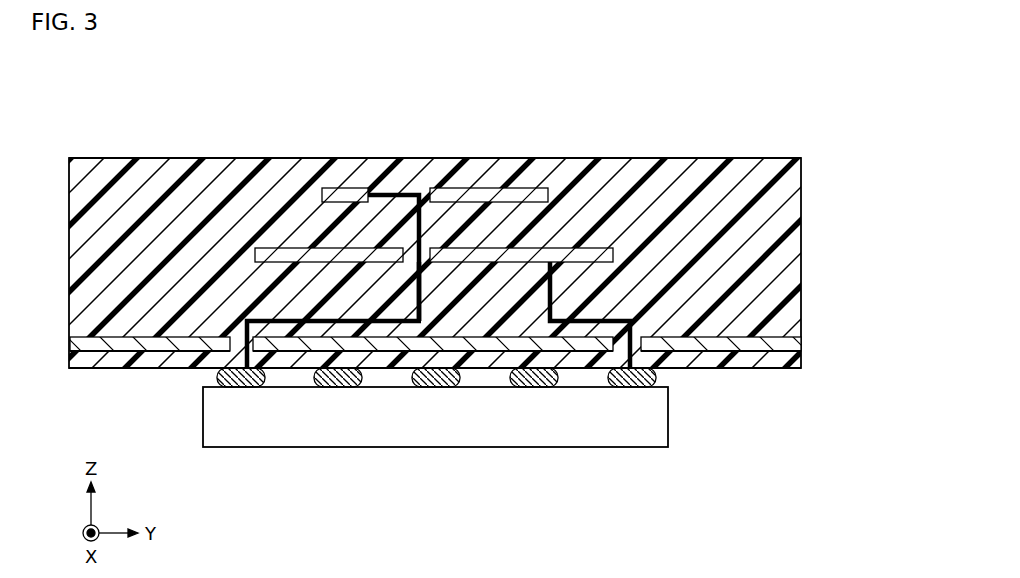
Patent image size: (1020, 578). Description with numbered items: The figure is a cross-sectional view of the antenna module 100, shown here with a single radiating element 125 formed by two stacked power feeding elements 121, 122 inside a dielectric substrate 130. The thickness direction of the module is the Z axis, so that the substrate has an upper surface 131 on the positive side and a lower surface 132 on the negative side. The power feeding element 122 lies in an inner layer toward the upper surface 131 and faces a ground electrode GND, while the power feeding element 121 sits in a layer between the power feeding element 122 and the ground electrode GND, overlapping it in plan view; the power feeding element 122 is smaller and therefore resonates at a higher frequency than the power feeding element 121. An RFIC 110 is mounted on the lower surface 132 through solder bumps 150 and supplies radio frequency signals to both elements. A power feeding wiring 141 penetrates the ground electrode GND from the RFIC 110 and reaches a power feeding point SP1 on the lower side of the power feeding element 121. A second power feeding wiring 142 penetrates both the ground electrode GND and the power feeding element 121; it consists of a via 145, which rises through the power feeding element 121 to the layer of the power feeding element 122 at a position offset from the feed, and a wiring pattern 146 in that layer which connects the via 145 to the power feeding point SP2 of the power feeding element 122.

The antenna module 100 is at (792, 114).
The RFIC 110 is at (668, 418).
The power feeding element 121 is at (528, 257).
The power feeding element 122 is at (492, 193).
The radiating element 125 is at (521, 170).
The dielectric substrate 130 is at (801, 222).
The upper surface 131 is at (750, 158).
The lower surface 132 is at (751, 369).
The power feeding wiring 141 is at (632, 330).
The power feeding wiring 142 is at (293, 325).
The via 145 is at (418, 285).
The wiring pattern 146 is at (409, 193).
The solder bump 150 is at (218, 376).
The ground electrode GND is at (801, 344).
The power feeding point SP1 is at (552, 262).
The power feeding point SP2 is at (372, 192).